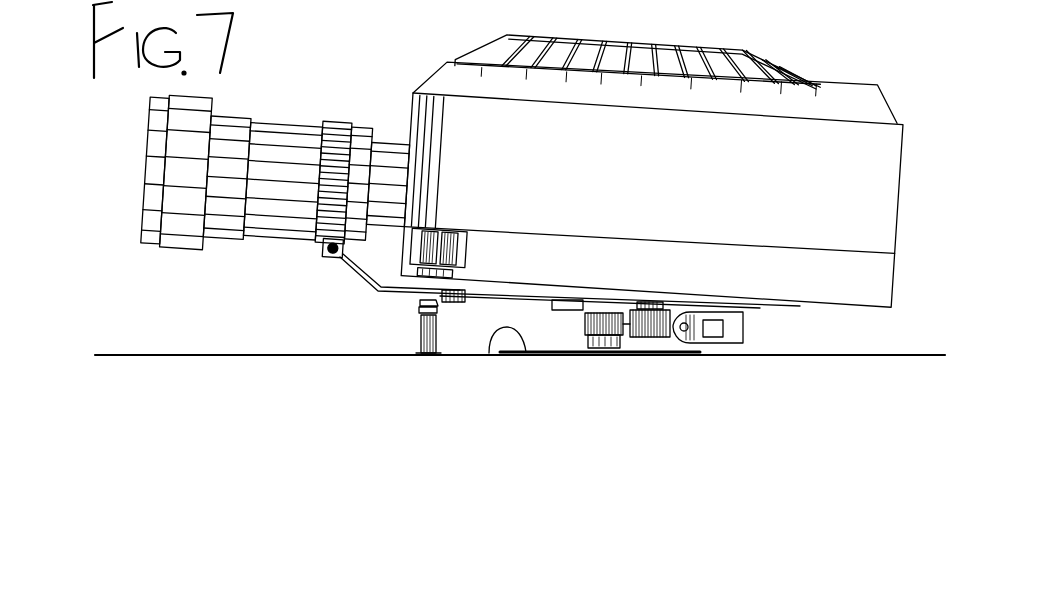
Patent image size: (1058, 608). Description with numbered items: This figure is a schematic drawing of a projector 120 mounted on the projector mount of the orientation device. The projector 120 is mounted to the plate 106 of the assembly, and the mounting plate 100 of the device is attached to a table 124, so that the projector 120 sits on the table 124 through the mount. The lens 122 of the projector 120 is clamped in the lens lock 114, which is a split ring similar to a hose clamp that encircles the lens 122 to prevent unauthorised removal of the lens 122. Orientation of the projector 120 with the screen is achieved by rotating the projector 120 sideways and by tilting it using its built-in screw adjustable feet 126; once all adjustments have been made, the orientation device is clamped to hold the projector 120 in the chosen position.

The mounting plate 100 is at (489, 358).
The plate 106 is at (810, 307).
The lens lock 114 is at (320, 254).
The projector 120 is at (462, 153).
The lens 122 is at (222, 258).
The table 124 is at (808, 363).
The screw adjustable feet 126 is at (401, 350).